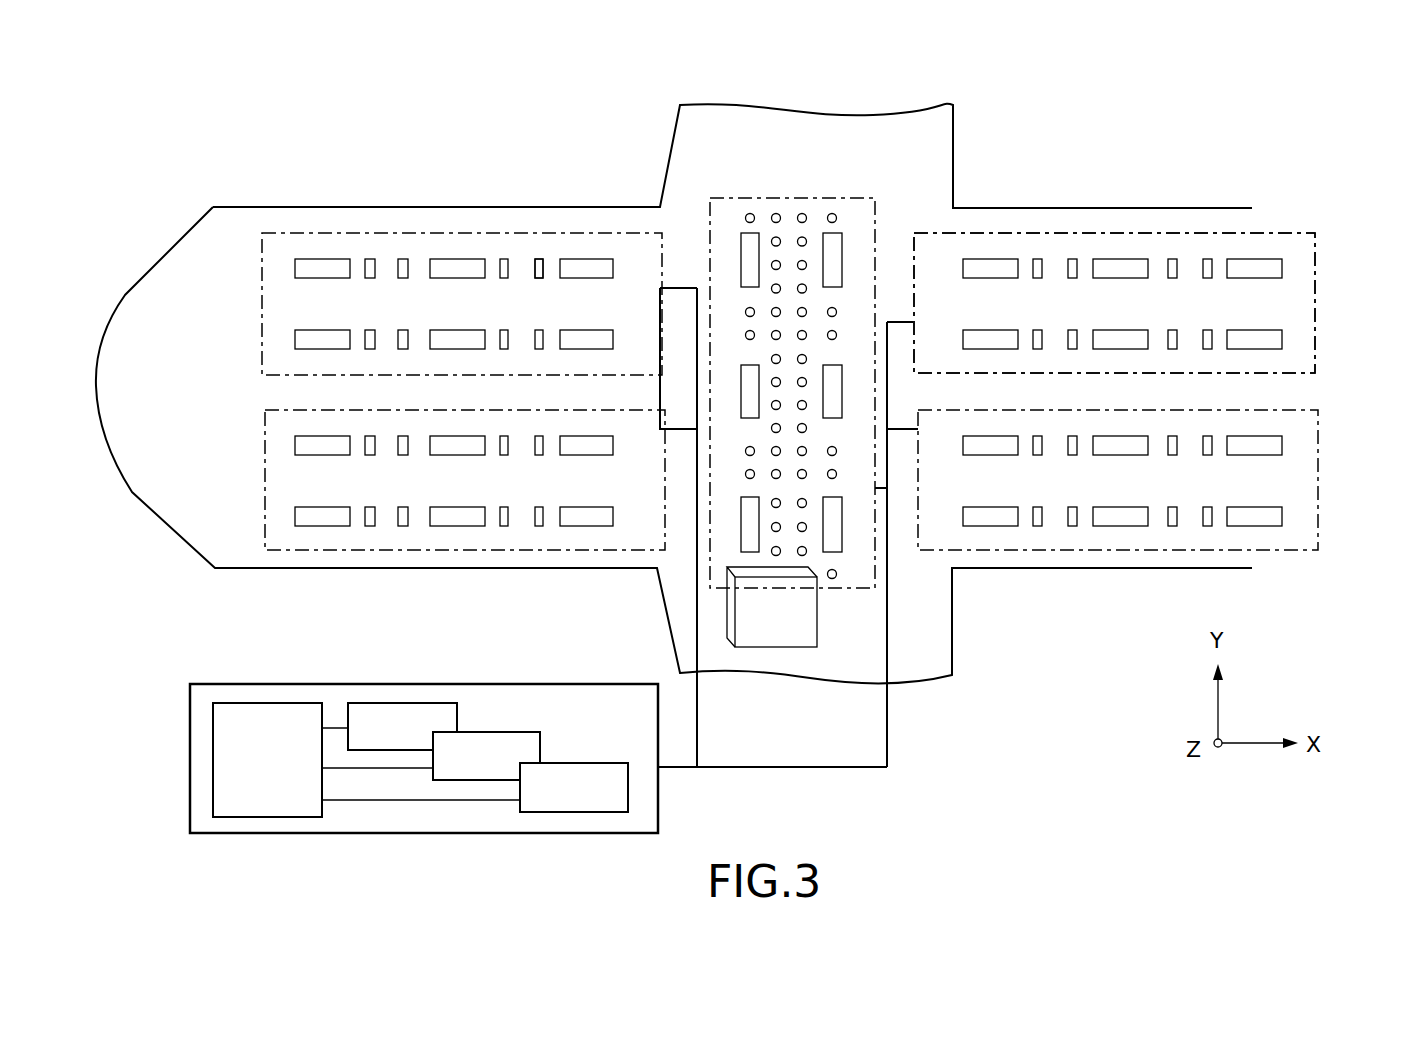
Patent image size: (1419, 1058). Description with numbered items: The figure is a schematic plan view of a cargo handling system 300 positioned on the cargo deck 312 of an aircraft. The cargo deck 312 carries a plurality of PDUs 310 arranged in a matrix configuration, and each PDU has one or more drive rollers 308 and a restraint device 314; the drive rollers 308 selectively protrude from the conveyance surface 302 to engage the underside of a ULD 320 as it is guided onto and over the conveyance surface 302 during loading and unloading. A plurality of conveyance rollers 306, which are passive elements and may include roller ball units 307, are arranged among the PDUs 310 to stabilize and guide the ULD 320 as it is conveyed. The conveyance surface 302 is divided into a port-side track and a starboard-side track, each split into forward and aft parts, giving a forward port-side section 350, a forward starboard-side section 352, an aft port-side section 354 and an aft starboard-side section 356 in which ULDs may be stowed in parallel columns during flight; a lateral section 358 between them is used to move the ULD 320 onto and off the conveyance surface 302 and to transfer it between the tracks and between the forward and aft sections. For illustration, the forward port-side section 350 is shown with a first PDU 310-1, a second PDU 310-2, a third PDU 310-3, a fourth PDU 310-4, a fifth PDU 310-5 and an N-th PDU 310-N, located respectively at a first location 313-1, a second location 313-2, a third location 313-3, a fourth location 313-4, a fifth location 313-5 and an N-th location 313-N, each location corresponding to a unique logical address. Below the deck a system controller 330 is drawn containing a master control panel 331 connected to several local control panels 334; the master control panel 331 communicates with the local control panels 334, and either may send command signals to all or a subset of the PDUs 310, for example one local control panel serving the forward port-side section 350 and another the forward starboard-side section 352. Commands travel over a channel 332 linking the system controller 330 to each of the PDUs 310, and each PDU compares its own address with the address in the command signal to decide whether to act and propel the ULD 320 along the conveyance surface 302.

The cargo handling system 300 is at (235, 118).
The conveyance surface 302 is at (971, 319).
The conveyance rollers 306 is at (1207, 262).
The roller ball units 307 is at (832, 218).
The drive rollers 308 is at (612, 262).
The PDUs 310 is at (375, 215).
The first PDU 310-1 is at (312, 436).
The second PDU 310-2 is at (448, 436).
The third PDU 310-3 is at (568, 436).
The fourth PDU 310-4 is at (343, 527).
The fifth PDU 310-5 is at (478, 527).
The N-th PDU 310-N is at (592, 527).
The cargo deck 312 is at (523, 268).
The first location 313-1 is at (364, 466).
The second location 313-2 is at (499, 466).
The third location 313-3 is at (605, 424).
The fourth location 313-4 is at (366, 536).
The fifth location 313-5 is at (501, 536).
The N-th location 313-N is at (621, 501).
The restraint device 314 is at (565, 265).
The ULD 320 is at (748, 633).
The system controller 330 is at (190, 735).
The master control panel 331 is at (280, 817).
The channel 332 is at (852, 768).
The local control panels 334 is at (457, 718).
The forward port-side section 350 is at (265, 477).
The forward starboard-side section 352 is at (263, 317).
The aft port-side section 354 is at (1318, 505).
The aft starboard-side section 356 is at (1315, 305).
The lateral section 358 is at (710, 198).